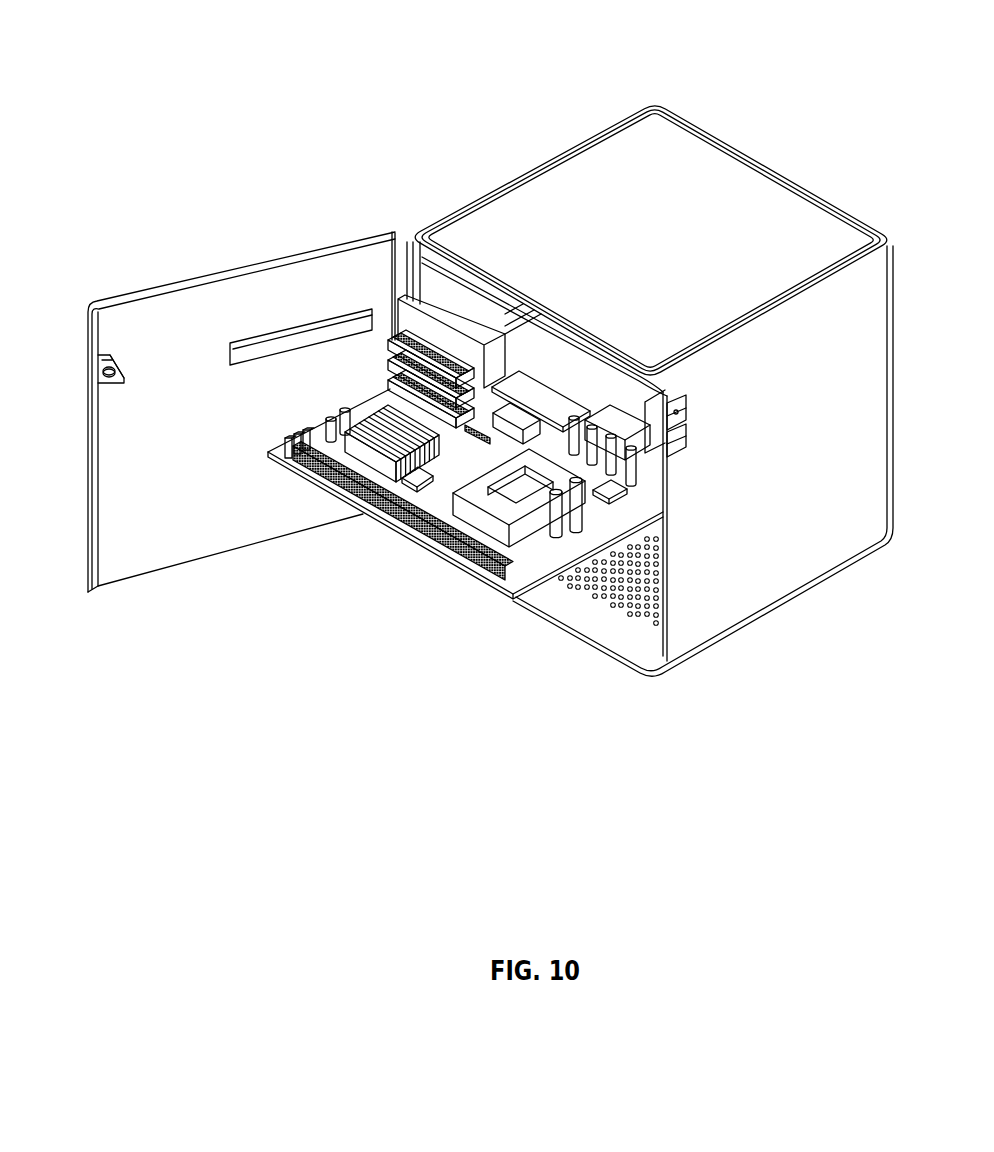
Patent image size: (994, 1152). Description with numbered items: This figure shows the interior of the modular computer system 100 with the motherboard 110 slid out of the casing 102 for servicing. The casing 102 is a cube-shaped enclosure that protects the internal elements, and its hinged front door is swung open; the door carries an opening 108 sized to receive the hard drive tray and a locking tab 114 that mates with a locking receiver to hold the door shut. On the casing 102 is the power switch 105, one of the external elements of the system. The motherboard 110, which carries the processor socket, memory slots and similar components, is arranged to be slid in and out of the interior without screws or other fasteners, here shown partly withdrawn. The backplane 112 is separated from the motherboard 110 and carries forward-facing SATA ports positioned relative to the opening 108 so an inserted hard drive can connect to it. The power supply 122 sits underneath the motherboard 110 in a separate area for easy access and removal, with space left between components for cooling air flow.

The modular computer system 100 is at (408, 86).
The casing 102 is at (566, 160).
The power switch 105 is at (709, 413).
The opening 108 is at (313, 332).
The motherboard 110 is at (637, 508).
The backplane 112 is at (390, 344).
The locking tab 114 is at (103, 368).
The power supply 122 is at (637, 618).